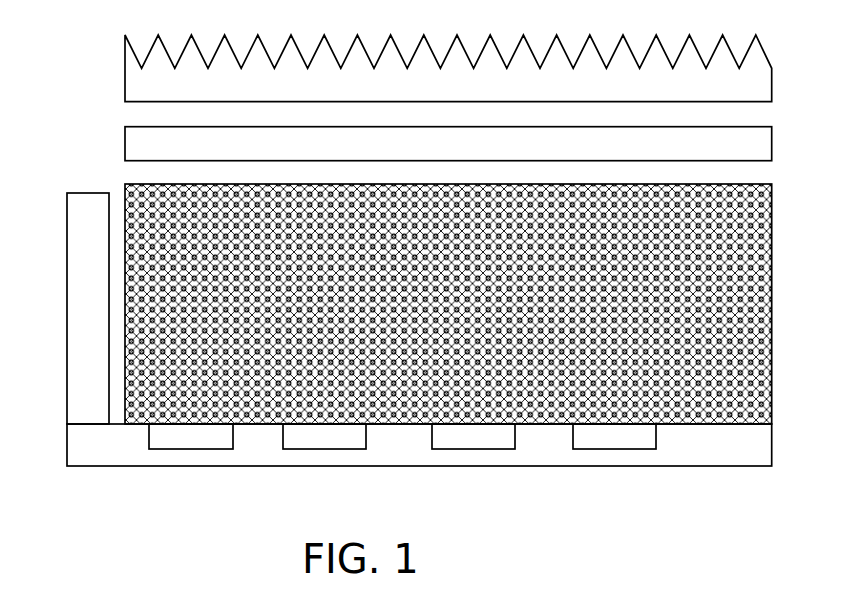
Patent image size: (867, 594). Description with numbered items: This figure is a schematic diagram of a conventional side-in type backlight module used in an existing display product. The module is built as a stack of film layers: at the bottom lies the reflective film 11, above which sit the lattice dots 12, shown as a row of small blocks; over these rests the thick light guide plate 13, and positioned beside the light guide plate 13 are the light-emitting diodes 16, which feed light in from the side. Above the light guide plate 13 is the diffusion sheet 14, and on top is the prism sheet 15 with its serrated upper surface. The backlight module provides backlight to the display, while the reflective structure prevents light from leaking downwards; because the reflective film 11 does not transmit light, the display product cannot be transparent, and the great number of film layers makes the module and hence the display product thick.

The reflective film 11 is at (755, 453).
The lattice dots 12 is at (630, 433).
The light guide plate 13 is at (738, 375).
The diffusion sheet 14 is at (755, 143).
The prism sheet 15 is at (754, 77).
The light-emitting diodes 16 is at (77, 211).